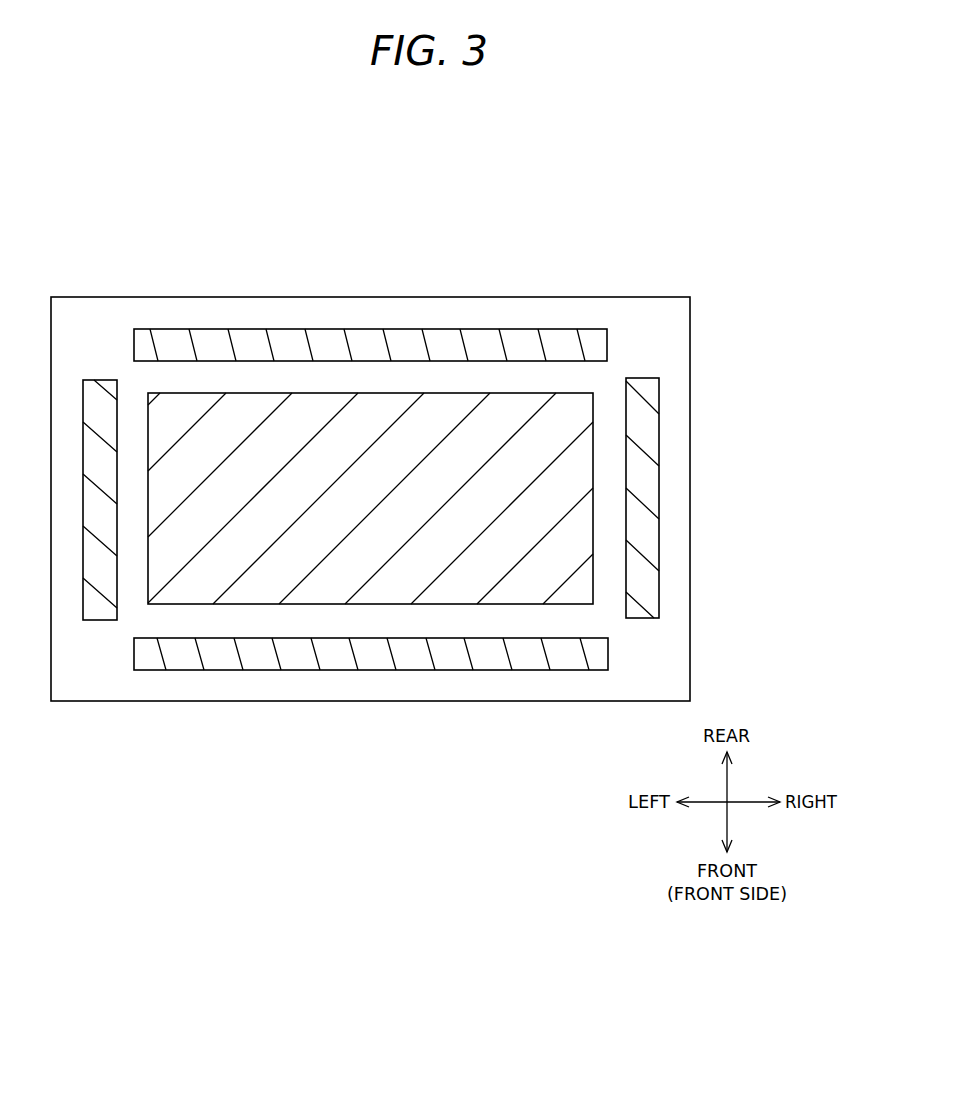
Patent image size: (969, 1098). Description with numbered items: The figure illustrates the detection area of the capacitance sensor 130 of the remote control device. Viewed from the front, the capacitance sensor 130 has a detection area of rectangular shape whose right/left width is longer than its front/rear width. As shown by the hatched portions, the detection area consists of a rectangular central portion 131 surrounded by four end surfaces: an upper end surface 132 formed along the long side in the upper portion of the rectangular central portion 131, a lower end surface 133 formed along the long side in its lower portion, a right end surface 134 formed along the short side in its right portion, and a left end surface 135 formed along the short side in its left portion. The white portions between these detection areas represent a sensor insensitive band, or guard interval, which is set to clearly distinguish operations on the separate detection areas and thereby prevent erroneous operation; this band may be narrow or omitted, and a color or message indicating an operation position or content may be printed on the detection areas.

The capacitance sensor 130 is at (590, 297).
The rectangular central portion 131 is at (246, 393).
The upper end surface 132 is at (402, 329).
The lower end surface 133 is at (298, 660).
The right end surface 134 is at (659, 493).
The left end surface 135 is at (103, 610).